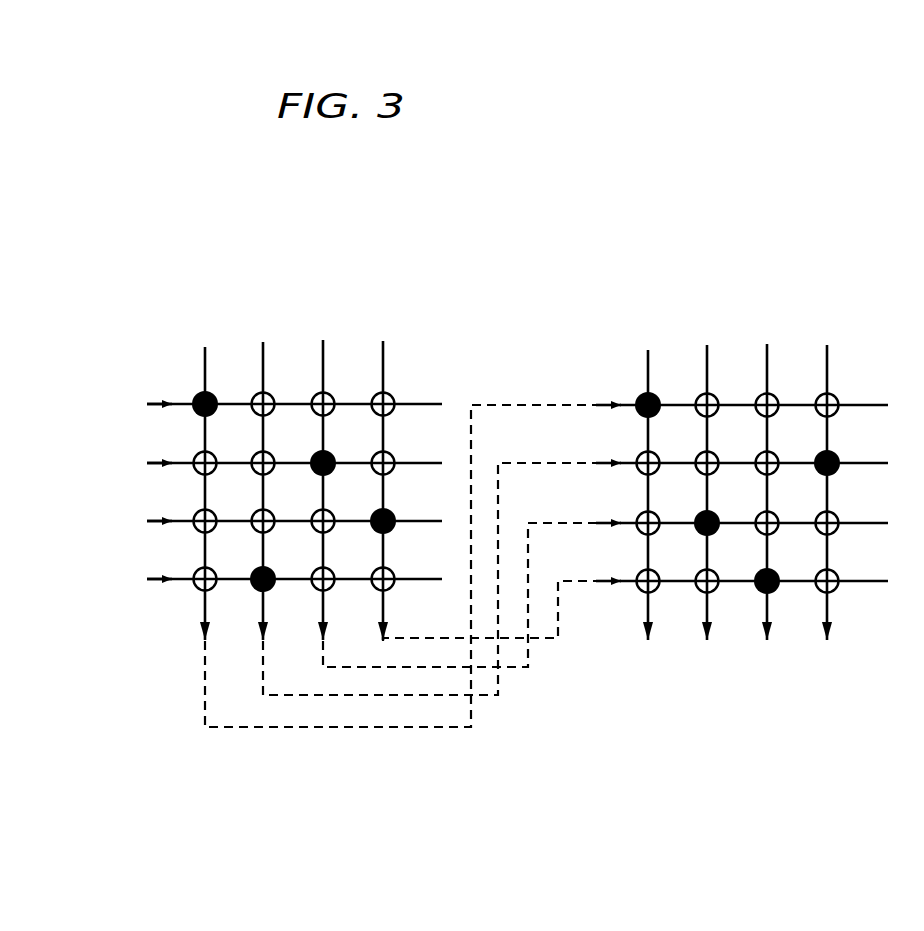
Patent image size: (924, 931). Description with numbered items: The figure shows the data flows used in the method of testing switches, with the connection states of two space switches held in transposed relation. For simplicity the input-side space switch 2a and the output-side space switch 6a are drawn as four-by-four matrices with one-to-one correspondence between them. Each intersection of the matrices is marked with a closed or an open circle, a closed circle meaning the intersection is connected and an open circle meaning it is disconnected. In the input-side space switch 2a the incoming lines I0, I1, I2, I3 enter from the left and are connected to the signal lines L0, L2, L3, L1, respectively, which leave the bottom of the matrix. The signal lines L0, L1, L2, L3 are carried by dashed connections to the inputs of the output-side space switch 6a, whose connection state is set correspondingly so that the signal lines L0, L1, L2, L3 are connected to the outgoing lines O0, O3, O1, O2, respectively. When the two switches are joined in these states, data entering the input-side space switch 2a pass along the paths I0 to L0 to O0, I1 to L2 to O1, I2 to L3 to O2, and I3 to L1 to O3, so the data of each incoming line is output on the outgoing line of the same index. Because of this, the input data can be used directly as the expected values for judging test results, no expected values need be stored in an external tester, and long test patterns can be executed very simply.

The input-side space switch 2a is at (308, 299).
The output-side space switch 6a is at (825, 316).
The incoming line I0 is at (272, 403).
The incoming line I1 is at (272, 462).
The incoming line I2 is at (272, 520).
The incoming line I3 is at (272, 578).
The signal line L0 is at (522, 537).
The signal line L1 is at (554, 518).
The signal line L2 is at (583, 503).
The signal line L3 is at (612, 494).
The outgoing line O0 is at (646, 517).
The outgoing line O1 is at (706, 514).
The outgoing line O2 is at (766, 514).
The outgoing line O3 is at (826, 514).